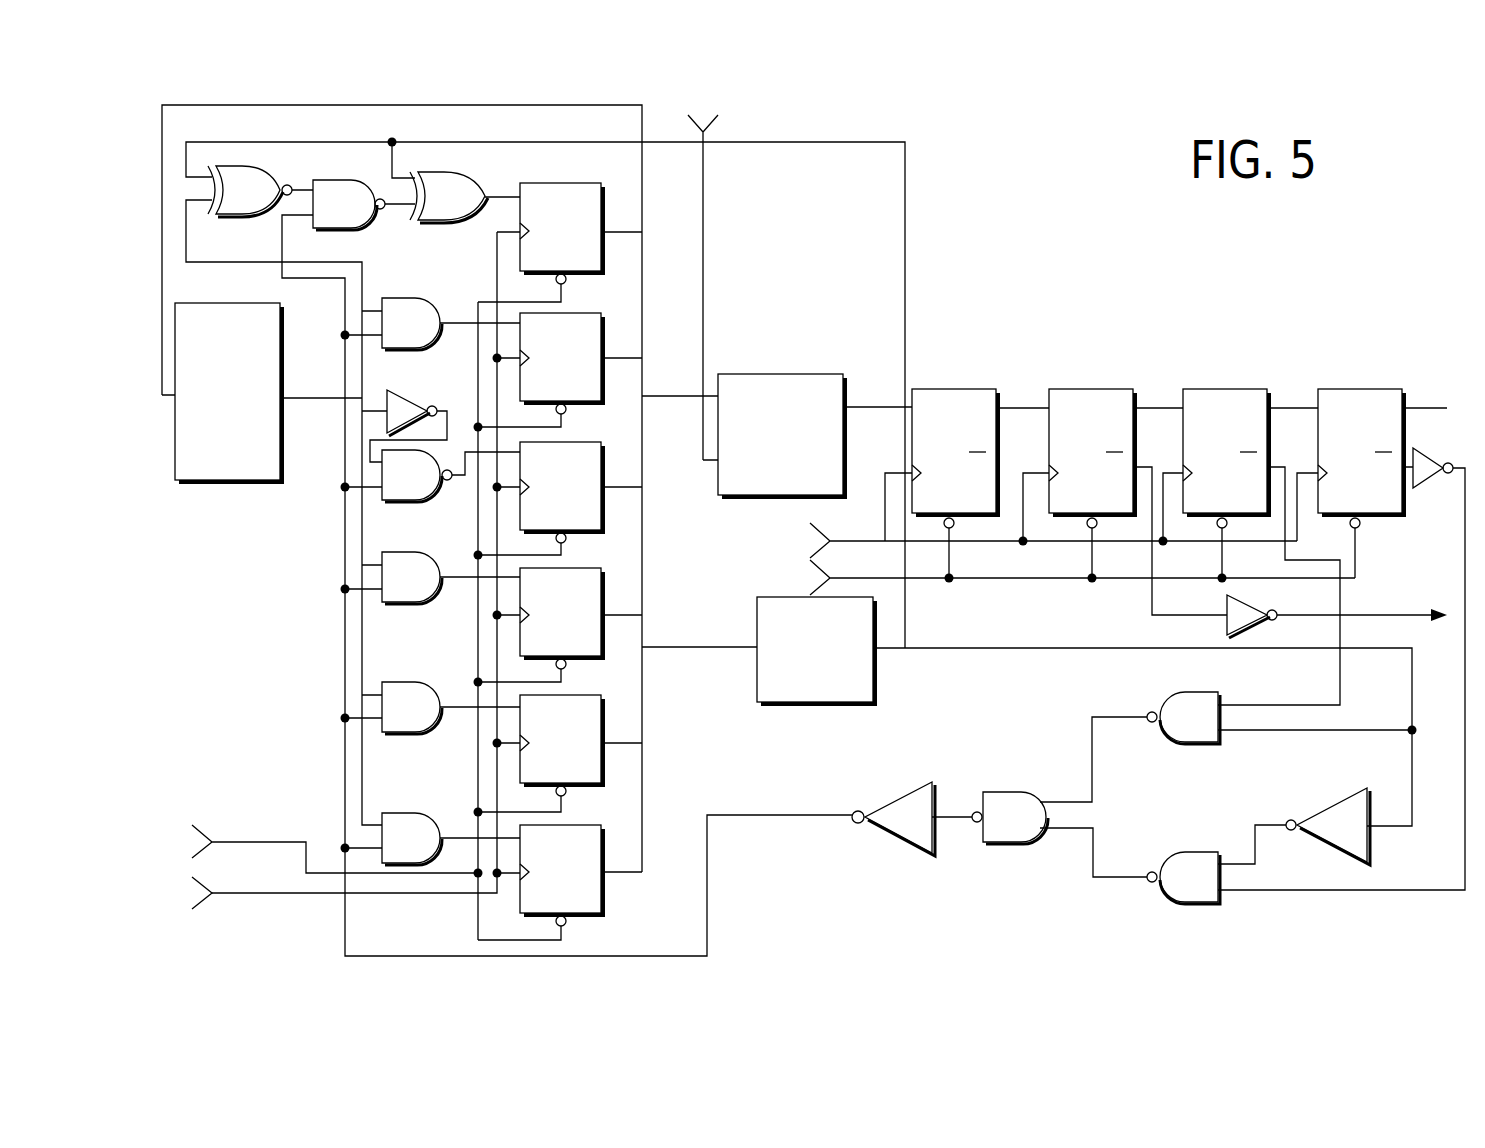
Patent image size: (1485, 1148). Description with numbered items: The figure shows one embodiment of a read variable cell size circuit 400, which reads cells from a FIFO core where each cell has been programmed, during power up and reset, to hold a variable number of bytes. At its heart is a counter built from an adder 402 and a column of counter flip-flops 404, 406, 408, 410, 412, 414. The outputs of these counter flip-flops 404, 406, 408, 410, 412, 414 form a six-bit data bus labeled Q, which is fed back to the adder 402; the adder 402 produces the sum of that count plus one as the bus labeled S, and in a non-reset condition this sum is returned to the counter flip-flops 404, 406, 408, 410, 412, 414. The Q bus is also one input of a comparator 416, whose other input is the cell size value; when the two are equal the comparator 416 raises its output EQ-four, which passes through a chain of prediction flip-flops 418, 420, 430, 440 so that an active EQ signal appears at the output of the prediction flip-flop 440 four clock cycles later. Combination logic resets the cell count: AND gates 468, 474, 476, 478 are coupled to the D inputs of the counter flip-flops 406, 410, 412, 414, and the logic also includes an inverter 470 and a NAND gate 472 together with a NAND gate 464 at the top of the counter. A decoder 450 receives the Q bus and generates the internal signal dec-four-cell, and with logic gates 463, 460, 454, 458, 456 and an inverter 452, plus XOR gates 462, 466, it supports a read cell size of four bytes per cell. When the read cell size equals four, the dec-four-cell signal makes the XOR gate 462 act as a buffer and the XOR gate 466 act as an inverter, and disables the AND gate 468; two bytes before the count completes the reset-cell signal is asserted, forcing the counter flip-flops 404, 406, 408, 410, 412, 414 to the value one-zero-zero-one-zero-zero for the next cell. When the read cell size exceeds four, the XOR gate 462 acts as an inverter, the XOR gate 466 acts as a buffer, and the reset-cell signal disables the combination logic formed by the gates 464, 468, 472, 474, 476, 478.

The read variable cell size circuit 400 is at (1153, 288).
The adder 402 is at (208, 445).
The counter flip-flop 404 is at (541, 236).
The counter flip-flop 406 is at (541, 366).
The counter flip-flop 408 is at (541, 495).
The counter flip-flop 410 is at (541, 621).
The counter flip-flop 412 is at (541, 748).
The counter flip-flop 414 is at (541, 878).
The comparator 416 is at (760, 466).
The prediction flip-flop 418 is at (966, 460).
The prediction flip-flop 420 is at (1103, 460).
The prediction flip-flop 430 is at (1237, 460).
The prediction flip-flop 440 is at (1372, 460).
The decoder 450 is at (796, 676).
The inverter 452 is at (1227, 622).
The logic gate 454 is at (1170, 729).
The logic gate 456 is at (1319, 839).
The logic gate 458 is at (1170, 889).
The logic gate 460 is at (995, 830).
The XOR gate 462 is at (228, 200).
The logic gate 463 is at (925, 829).
The NAND gate 464 is at (359, 217).
The XOR gate 466 is at (430, 203).
The AND gate 468 is at (427, 335).
The inverter 470 is at (406, 390).
The NAND gate 472 is at (427, 487).
The AND gate 474 is at (427, 589).
The AND gate 476 is at (427, 719).
The AND gate 478 is at (427, 850).